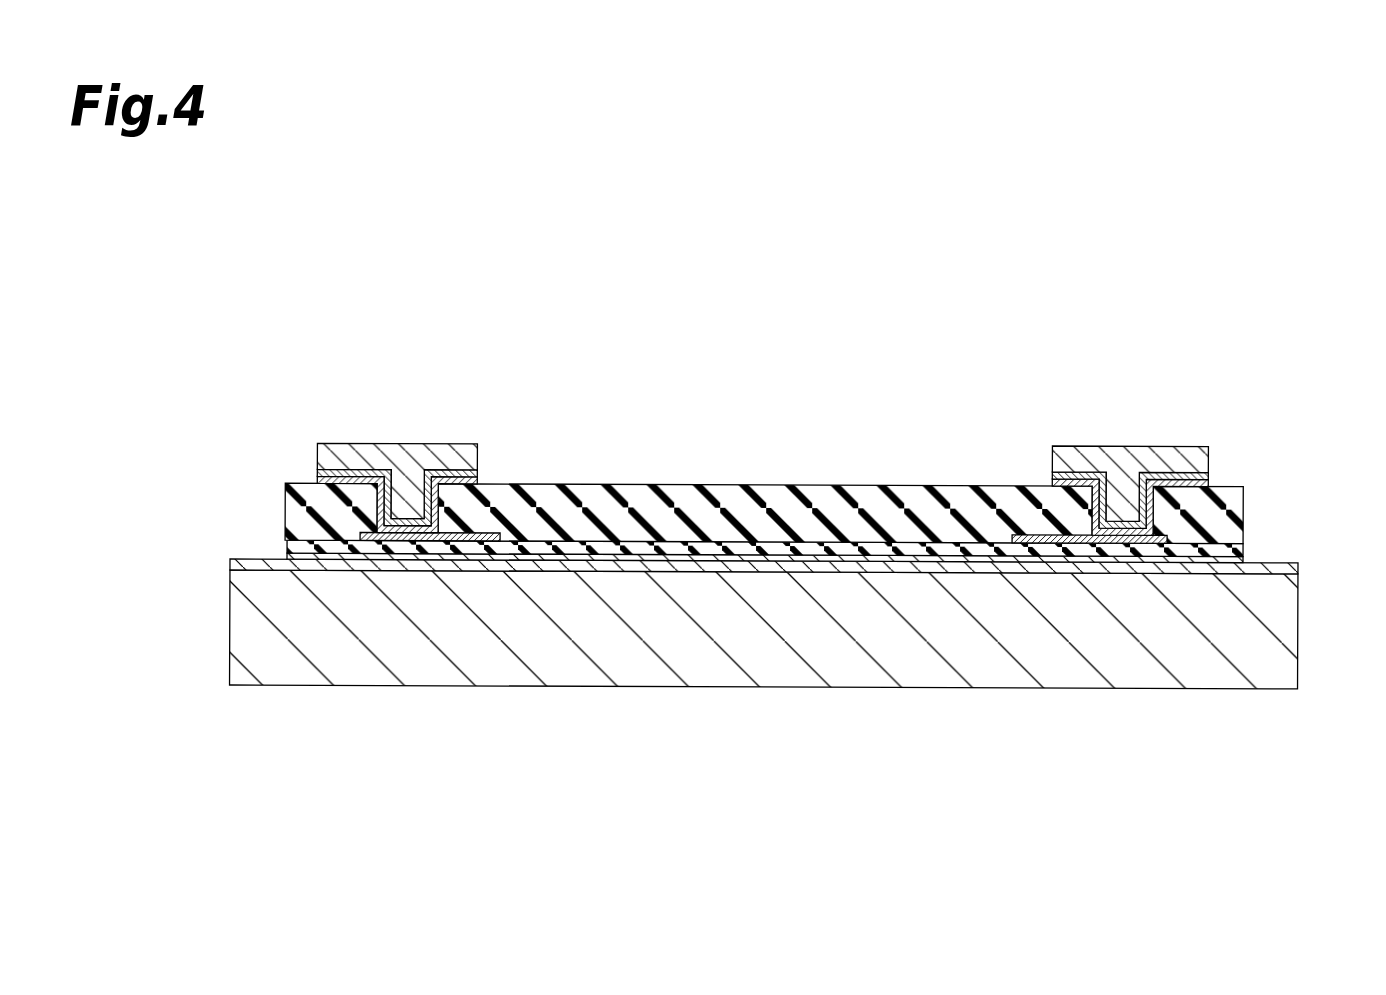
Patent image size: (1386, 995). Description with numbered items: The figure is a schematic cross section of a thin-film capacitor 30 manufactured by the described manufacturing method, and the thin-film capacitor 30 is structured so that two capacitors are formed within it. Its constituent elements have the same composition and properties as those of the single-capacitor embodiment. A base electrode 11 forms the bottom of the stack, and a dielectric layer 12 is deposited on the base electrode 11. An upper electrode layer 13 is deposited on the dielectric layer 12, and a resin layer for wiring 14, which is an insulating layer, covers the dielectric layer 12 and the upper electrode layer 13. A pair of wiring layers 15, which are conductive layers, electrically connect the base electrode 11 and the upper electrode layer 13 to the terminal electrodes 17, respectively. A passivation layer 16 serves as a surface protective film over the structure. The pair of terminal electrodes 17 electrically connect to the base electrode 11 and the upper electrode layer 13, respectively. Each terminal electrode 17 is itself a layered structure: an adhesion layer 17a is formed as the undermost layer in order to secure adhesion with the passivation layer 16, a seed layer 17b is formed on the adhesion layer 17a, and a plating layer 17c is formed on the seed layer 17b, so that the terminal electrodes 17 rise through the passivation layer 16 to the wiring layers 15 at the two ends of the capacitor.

The base electrode 11 is at (1282, 630).
The dielectric layer 12 is at (1287, 570).
The upper electrode layer 13 is at (593, 556).
The resin layer for wiring 14 is at (297, 551).
The wiring layer 15 is at (485, 533).
The passivation layer 16 is at (787, 513).
The terminal electrode 17 is at (768, 457).
The adhesion layer 17a is at (313, 482).
The seed layer 17b is at (318, 476).
The plating layer 17c is at (325, 457).
The thin-film capacitor 30 is at (1167, 333).